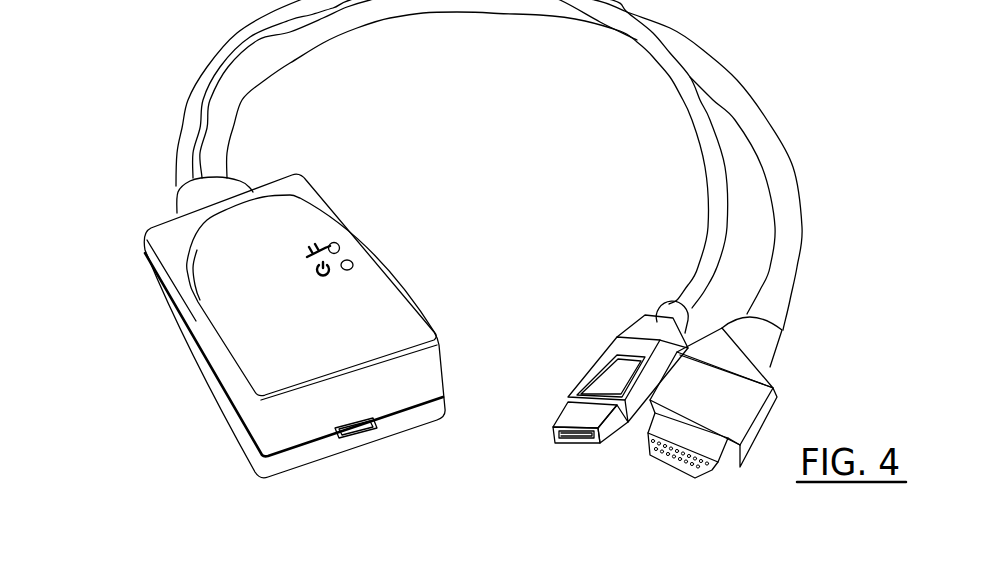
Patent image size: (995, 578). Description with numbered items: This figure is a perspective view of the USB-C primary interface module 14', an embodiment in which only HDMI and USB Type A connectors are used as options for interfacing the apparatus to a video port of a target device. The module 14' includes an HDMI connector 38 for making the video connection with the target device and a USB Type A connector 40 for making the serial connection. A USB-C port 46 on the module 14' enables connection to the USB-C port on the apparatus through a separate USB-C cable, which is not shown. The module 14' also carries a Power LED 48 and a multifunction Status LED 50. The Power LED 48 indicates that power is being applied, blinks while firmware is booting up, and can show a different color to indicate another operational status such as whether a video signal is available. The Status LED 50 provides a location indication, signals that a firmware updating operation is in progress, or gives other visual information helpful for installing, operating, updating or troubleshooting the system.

The USB-C primary interface module 14' is at (254, 298).
The HDMI connector 38 is at (725, 392).
The USB Type A connector 40 is at (612, 372).
The USB-C port 46 is at (361, 431).
The Power LED 48 is at (351, 261).
The Status LED 50 is at (334, 242).